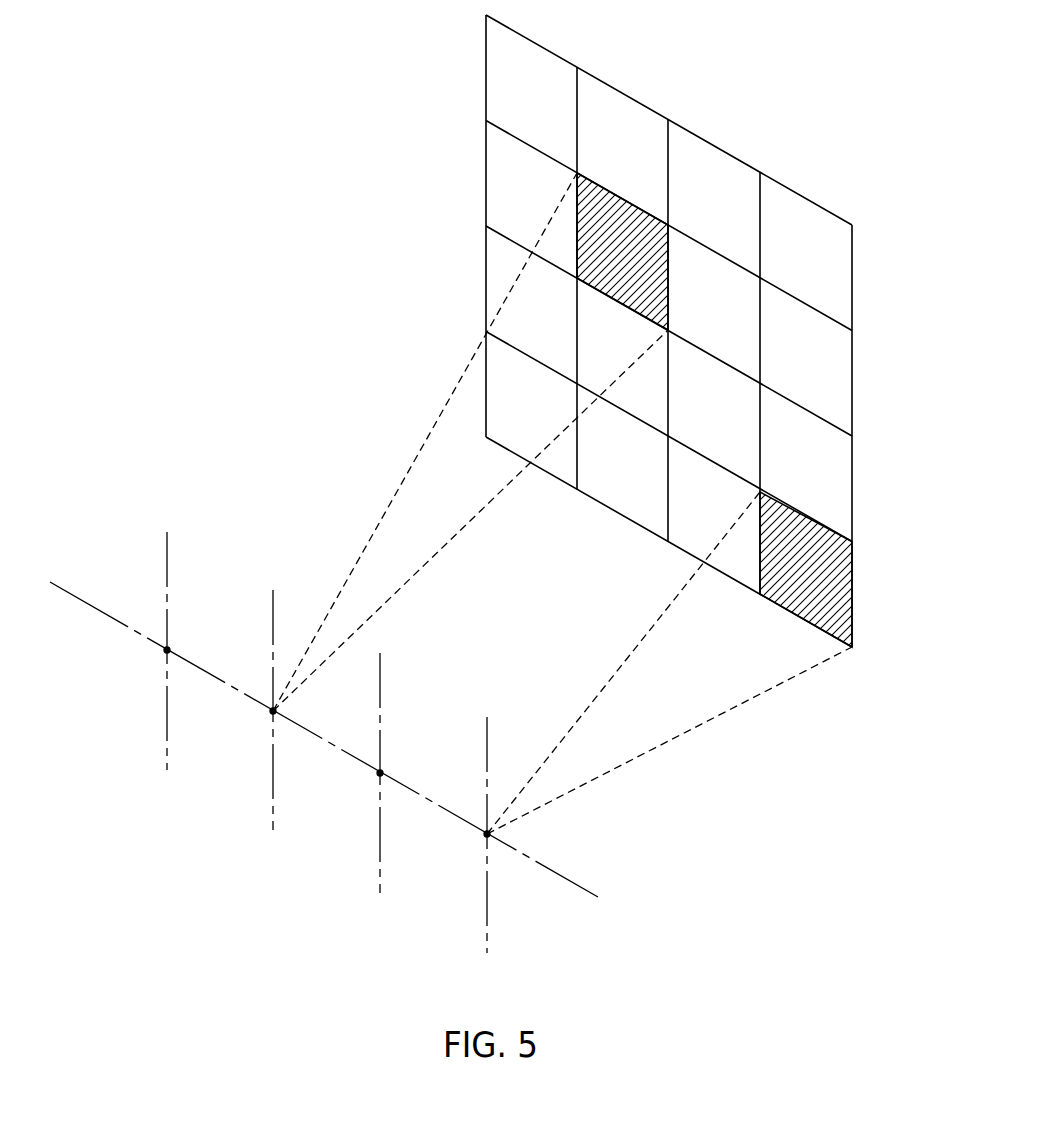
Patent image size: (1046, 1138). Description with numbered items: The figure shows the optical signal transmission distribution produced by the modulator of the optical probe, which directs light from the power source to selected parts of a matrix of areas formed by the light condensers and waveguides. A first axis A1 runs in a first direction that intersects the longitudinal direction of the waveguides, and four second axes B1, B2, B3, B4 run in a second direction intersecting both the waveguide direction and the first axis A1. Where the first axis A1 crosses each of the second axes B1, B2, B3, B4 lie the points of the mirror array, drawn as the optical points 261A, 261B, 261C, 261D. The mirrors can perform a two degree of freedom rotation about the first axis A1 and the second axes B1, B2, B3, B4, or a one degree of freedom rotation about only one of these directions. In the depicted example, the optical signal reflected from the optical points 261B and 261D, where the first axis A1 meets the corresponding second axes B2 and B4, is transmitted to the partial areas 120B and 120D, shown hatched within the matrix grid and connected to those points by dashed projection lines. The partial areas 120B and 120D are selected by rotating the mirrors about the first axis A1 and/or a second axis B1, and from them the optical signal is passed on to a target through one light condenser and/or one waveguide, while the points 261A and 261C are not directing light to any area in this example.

The partial area 120B is at (630, 220).
The partial area 120D is at (840, 575).
The mirror 261A is at (134, 661).
The optical point 261B is at (240, 722).
The mirror 261C is at (347, 784).
The optical point 261D is at (454, 845).
The first axis A1 is at (341, 751).
The second axis B1 is at (166, 636).
The second axis B2 is at (273, 697).
The second axis B3 is at (380, 759).
The second axis B4 is at (487, 819).